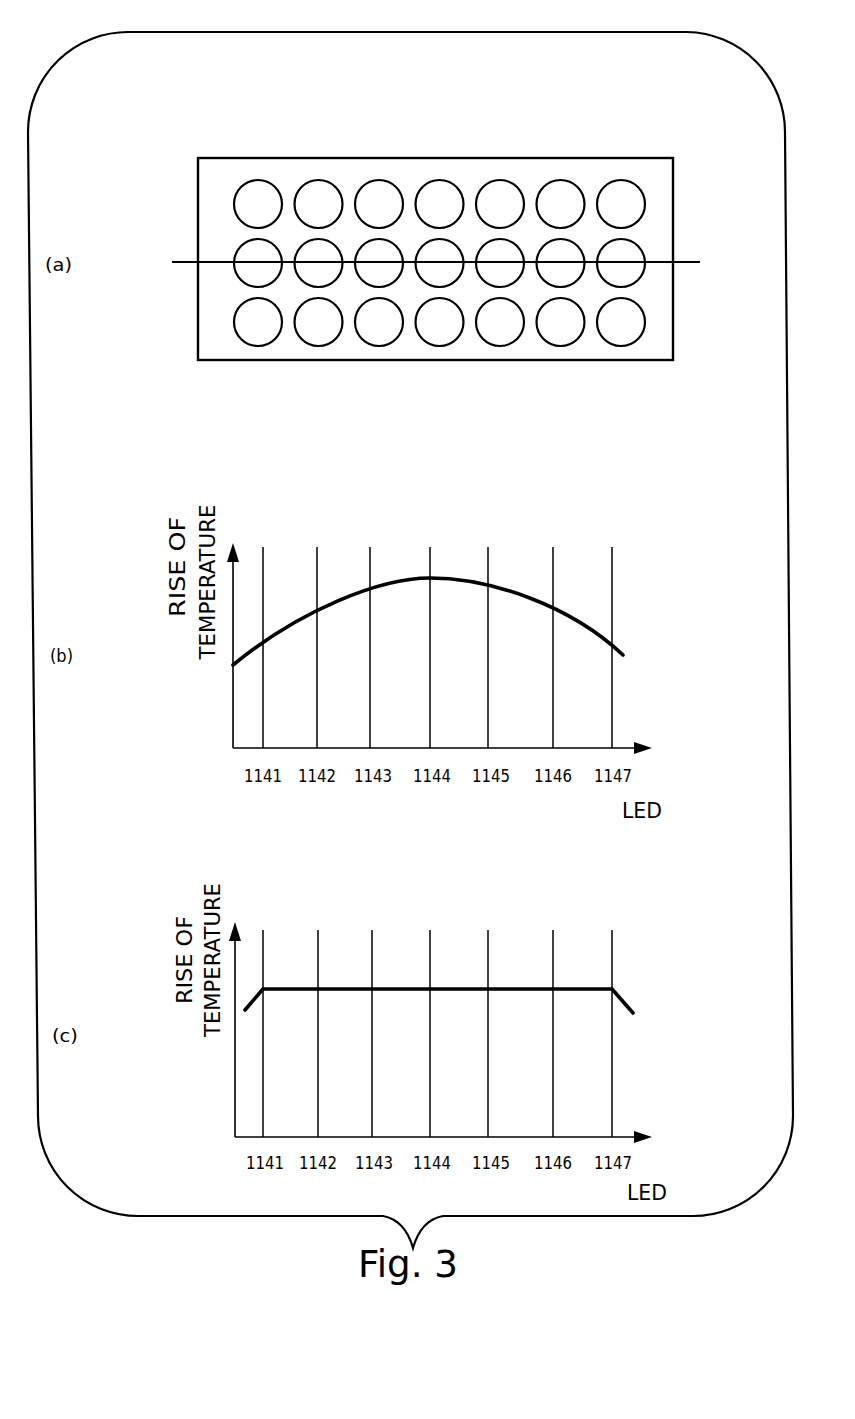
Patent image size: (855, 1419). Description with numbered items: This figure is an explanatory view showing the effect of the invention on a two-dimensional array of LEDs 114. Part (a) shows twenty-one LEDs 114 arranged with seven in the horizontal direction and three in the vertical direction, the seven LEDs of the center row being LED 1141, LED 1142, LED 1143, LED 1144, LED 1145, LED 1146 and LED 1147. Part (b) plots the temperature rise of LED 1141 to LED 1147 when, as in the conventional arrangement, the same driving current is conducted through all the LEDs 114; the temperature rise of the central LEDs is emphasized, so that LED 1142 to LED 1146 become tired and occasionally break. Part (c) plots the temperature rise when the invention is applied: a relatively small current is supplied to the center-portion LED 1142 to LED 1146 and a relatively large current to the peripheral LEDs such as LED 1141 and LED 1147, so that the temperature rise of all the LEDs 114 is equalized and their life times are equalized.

The LED 114 is at (452, 225).
The LED 1141 is at (253, 272).
The LED 1142 is at (316, 275).
The LED 1143 is at (378, 275).
The LED 1144 is at (440, 272).
The LED 1145 is at (502, 272).
The LED 1146 is at (562, 272).
The LED 1147 is at (630, 272).